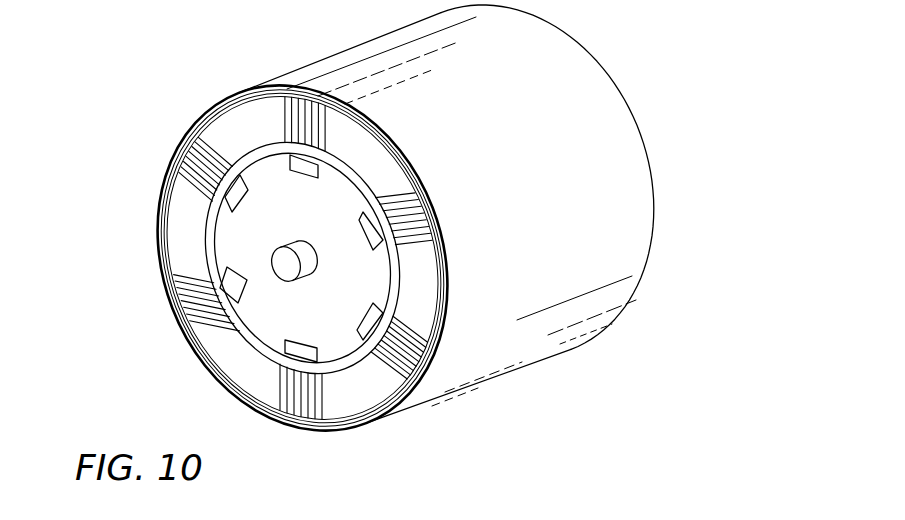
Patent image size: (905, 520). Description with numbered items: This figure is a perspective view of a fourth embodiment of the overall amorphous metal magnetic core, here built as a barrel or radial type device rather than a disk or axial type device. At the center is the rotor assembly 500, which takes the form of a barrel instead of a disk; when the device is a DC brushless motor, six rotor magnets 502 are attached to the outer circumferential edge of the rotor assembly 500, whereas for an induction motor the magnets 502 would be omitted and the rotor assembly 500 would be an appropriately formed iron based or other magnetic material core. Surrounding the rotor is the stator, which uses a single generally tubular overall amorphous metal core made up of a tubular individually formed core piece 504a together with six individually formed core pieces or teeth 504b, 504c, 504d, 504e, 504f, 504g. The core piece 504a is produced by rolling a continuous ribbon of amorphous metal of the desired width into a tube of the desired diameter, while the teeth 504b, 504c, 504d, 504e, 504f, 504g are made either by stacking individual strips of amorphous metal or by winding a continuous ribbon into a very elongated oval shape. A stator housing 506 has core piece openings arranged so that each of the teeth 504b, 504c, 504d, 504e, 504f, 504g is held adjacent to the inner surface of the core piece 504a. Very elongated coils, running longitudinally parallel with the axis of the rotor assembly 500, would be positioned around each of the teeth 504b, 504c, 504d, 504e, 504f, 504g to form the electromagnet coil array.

The rotor assembly 500 is at (233, 251).
The rotor magnets 502 is at (307, 169).
The amorphous metal core piece 504a is at (433, 405).
The amorphous metal core piece 504b is at (308, 125).
The amorphous metal core piece 504c is at (434, 217).
The amorphous metal core piece 504d is at (400, 346).
The amorphous metal core piece 504e is at (298, 402).
The amorphous metal core piece 504f is at (206, 302).
The amorphous metal core piece 504g is at (205, 145).
The stator housing 506 is at (236, 353).